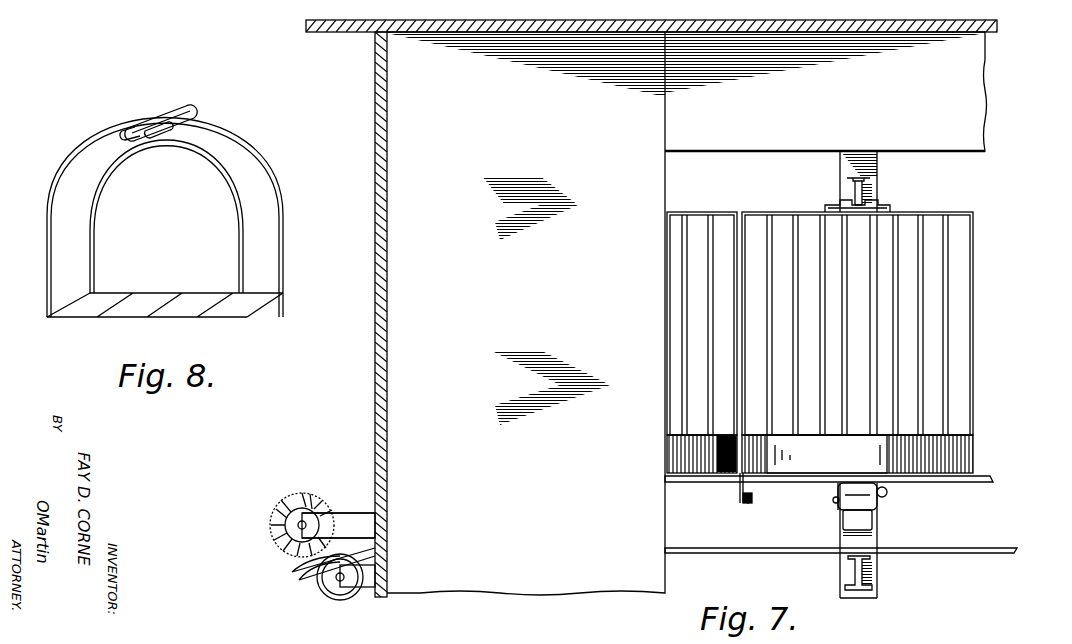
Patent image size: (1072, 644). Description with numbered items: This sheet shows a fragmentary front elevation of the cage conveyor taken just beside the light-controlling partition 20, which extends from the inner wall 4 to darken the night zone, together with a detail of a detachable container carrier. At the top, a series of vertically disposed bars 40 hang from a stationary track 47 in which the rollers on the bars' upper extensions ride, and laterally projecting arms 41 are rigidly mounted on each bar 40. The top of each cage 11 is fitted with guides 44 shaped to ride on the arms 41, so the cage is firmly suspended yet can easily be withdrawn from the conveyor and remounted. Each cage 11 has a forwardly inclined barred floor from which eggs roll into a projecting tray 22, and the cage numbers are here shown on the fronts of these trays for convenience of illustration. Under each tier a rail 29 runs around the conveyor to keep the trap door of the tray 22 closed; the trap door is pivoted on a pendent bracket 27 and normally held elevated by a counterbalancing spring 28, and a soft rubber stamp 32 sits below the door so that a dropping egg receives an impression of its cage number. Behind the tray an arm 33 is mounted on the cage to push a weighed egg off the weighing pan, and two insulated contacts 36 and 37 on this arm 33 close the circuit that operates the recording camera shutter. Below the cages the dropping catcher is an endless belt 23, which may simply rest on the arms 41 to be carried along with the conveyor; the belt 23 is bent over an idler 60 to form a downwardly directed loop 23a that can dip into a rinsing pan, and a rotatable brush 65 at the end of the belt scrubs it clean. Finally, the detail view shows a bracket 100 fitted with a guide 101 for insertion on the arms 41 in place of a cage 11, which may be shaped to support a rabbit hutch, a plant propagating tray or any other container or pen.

In FIG. 7, the inner wall 4 is at (375, 240).
In FIG. 7, the partition 20 is at (526, 313).
In FIG. 7, the stationary track 47 is at (972, 101).
In FIG. 7, the vertically disposed bar 40 is at (878, 173).
In FIG. 7, the laterally projecting arm 41 is at (863, 197).
In FIG. 7, the guide 44 is at (842, 207).
In FIG. 7, the cage 11 is at (698, 213).
In FIG. 7, the projecting tray 22 is at (975, 452).
In FIG. 7, the rail 29 is at (990, 479).
In FIG. 7, the arm 33 is at (741, 484).
In FIG. 7, the contact 37 is at (753, 498).
In FIG. 7, the contact 36 is at (748, 505).
In FIG. 7, the pendent bracket 27 is at (888, 492).
In FIG. 7, the counterbalancing spring 28 is at (865, 500).
In FIG. 7, the soft rubber stamp 32 is at (873, 522).
In FIG. 7, the endless belt 23 is at (1010, 552).
In FIG. 7, the rotatable brush 65 is at (306, 498).
In FIG. 7, the downwardly directed loop 23a is at (300, 578).
In FIG. 7, the idler 60 is at (338, 597).
In FIG. 8, the bracket 100 is at (283, 226).
In FIG. 8, the guide 101 is at (193, 99).